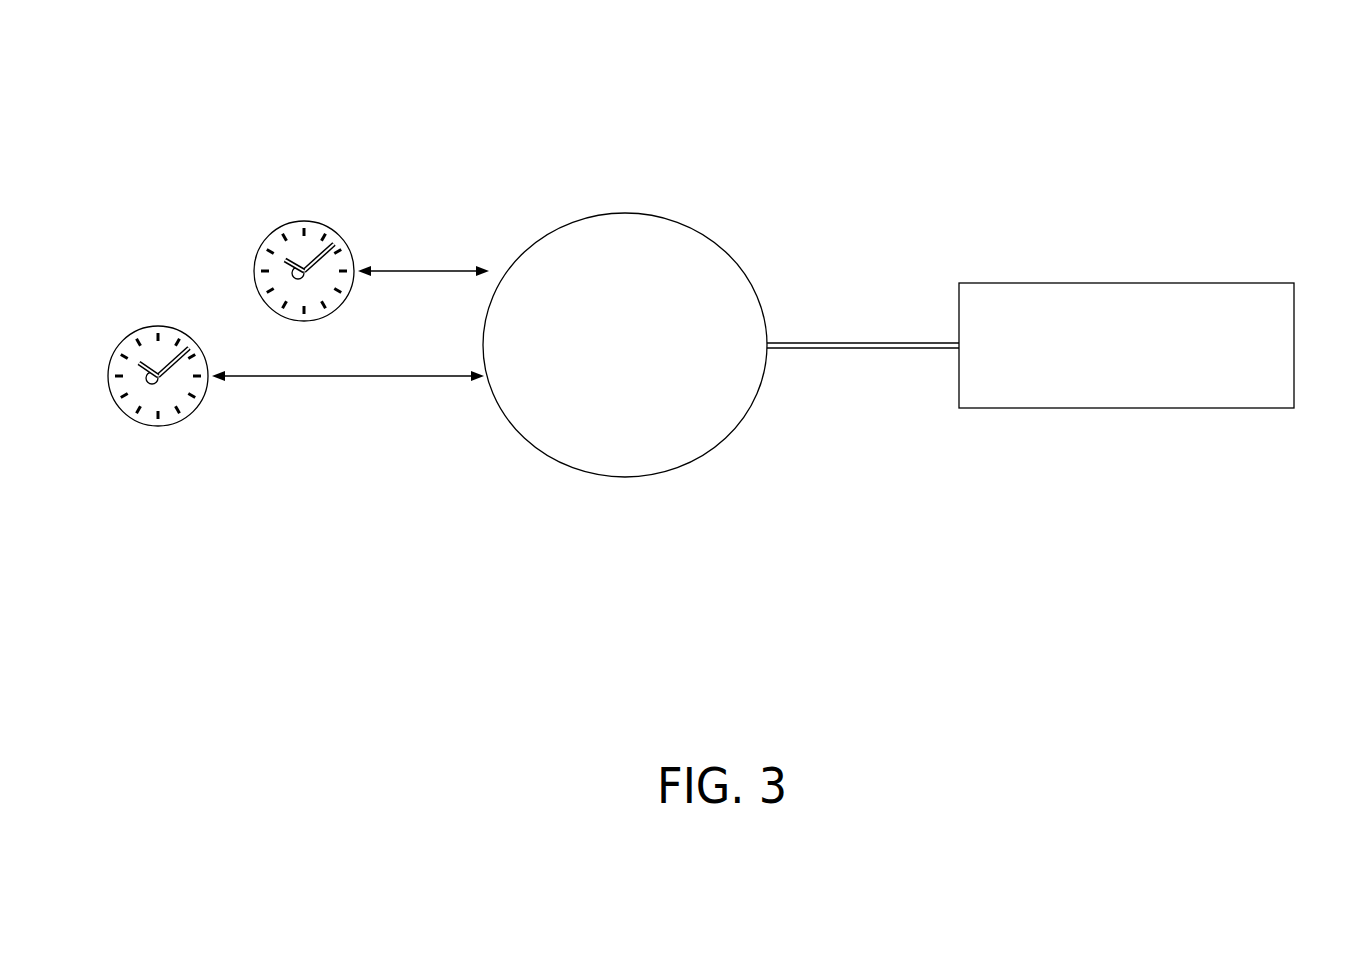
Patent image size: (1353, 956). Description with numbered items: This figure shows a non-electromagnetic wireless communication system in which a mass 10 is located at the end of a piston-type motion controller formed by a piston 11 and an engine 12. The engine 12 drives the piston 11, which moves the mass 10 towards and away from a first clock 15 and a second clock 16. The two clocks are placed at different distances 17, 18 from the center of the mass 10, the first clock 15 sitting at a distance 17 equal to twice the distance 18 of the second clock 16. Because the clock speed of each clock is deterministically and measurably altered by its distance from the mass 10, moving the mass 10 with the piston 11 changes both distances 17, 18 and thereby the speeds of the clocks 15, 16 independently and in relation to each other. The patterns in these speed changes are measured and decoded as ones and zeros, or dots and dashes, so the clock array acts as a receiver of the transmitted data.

The mass 10 is at (639, 200).
The piston 11 is at (869, 330).
The engine 12 is at (1145, 271).
The clock 15 is at (160, 313).
The second clock 16 is at (304, 208).
The distance 17 is at (248, 353).
The distance 18 is at (443, 255).